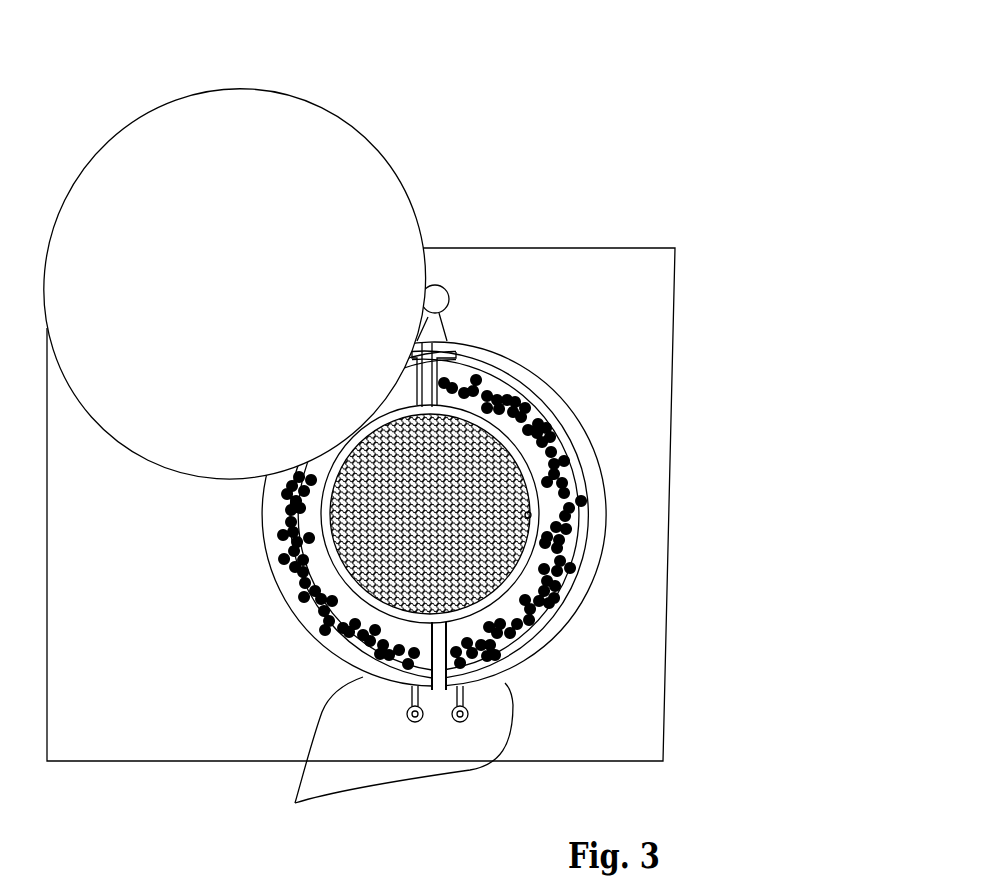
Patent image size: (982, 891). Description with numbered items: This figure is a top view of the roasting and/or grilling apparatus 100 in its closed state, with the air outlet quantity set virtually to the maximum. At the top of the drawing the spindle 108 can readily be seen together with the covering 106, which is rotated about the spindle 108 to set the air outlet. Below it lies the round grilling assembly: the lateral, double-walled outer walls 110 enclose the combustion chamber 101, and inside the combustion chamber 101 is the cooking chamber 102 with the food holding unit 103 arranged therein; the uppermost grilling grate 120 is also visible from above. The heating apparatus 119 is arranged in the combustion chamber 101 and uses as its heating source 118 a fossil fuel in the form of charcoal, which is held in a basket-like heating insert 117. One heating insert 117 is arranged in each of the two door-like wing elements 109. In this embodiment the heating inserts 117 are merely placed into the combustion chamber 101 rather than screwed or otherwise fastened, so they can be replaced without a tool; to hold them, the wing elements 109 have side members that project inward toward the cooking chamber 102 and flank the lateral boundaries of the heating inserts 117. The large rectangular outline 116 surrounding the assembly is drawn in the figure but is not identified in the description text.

The roasting and/or grilling apparatus 100 is at (552, 165).
The combustion chamber 101 is at (583, 518).
The cooking chamber 102 is at (527, 550).
The food holding unit 103 is at (332, 517).
The covering 106 is at (297, 180).
The spindle 108 is at (438, 285).
The wing elements 109 is at (395, 757).
The double-walled outer walls 110 is at (557, 390).
The substrate 116 is at (620, 275).
The heating insert 117 is at (565, 414).
The heating source 118 is at (572, 484).
The heating apparatus 119 is at (523, 633).
The uppermost grilling grate 120 is at (510, 580).